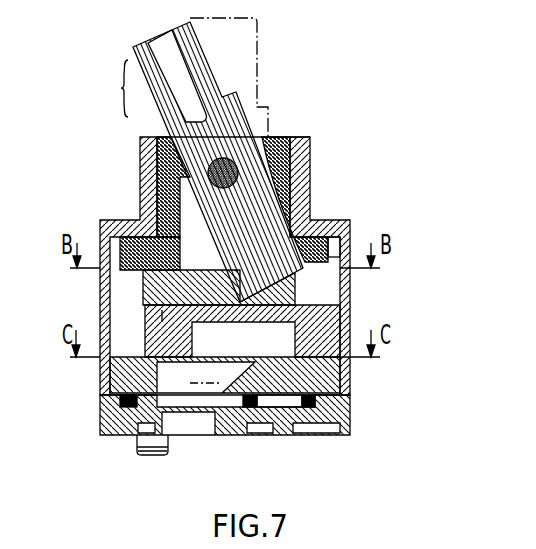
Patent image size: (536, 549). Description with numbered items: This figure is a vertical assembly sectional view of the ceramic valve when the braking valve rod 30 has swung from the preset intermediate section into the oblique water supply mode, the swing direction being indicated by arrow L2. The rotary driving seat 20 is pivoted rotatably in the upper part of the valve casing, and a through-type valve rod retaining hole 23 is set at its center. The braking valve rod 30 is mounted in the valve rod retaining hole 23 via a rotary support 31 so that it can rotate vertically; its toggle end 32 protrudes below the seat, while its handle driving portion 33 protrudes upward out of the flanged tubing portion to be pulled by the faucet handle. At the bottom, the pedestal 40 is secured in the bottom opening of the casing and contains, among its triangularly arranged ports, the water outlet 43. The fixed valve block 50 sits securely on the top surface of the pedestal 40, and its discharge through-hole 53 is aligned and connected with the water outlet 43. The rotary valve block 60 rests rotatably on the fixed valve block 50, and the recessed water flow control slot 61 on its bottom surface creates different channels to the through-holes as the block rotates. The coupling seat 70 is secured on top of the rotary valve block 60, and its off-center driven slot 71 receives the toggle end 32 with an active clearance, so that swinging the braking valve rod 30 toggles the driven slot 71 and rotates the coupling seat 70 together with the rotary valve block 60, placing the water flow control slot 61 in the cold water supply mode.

The rotary driving seat 20 is at (147, 196).
The valve rod retaining hole 23 is at (157, 230).
The braking valve rod 30 is at (277, 90).
The rotary support 31 is at (297, 137).
The toggle end 32 is at (340, 257).
The handle driving portion 33 is at (106, 88).
The arrow indicating swing to oblique water supply mode L2 is at (203, 32).
The pedestal 40 is at (100, 425).
The water outlet 43 is at (182, 402).
The fixed valve block 50 is at (320, 378).
The discharge through-hole 53 is at (125, 415).
The rotary valve block 60 is at (162, 337).
The water flow control slot 61 is at (168, 377).
The coupling seat 70 is at (340, 283).
The driven slot 71 is at (340, 294).